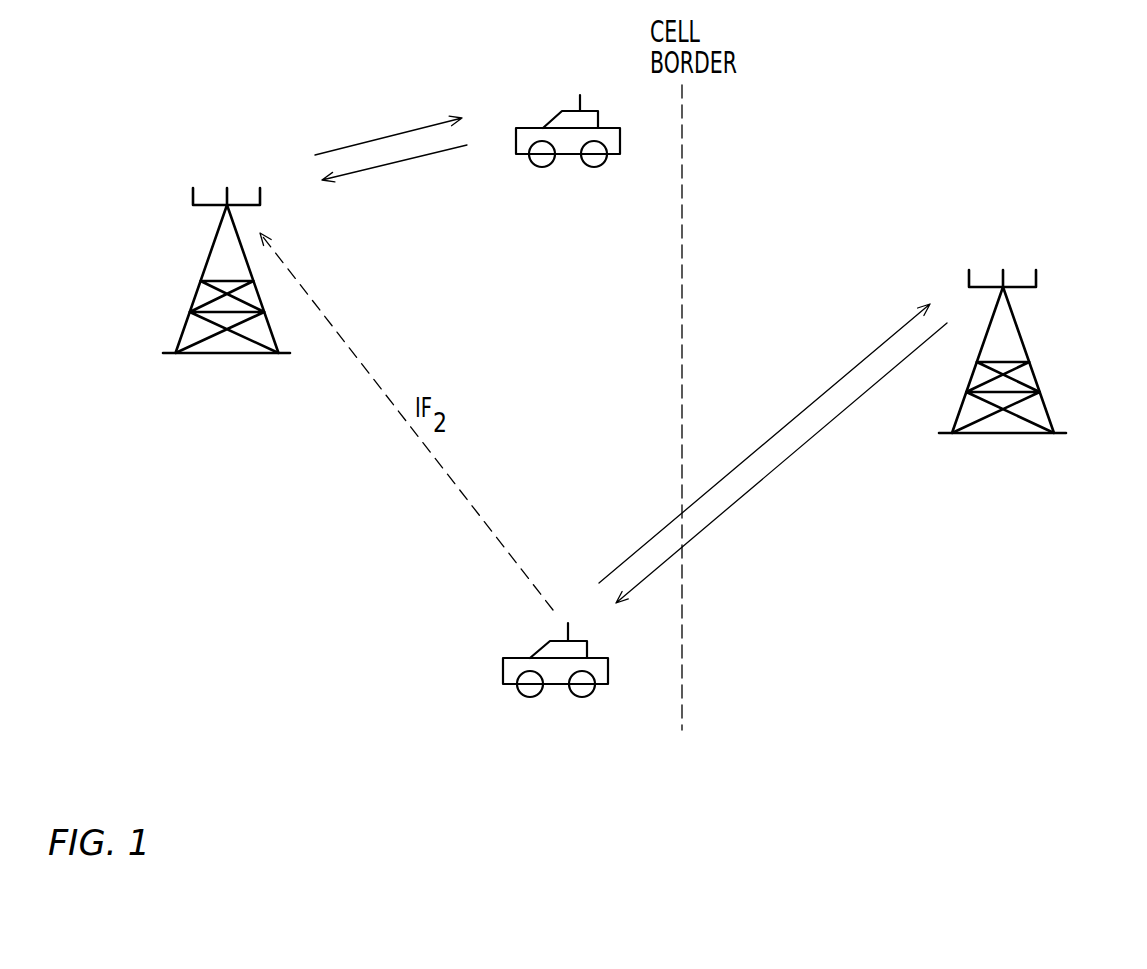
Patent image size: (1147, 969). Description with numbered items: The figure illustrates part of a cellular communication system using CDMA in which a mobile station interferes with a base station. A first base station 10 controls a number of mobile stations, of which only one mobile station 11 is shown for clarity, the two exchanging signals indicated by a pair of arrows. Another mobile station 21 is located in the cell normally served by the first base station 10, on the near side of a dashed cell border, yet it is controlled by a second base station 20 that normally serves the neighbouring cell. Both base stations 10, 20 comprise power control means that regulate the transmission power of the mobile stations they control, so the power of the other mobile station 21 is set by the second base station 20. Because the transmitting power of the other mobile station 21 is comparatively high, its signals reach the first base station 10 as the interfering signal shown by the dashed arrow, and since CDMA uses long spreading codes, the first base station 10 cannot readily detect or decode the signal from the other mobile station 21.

The first base station BS1 10 is at (188, 323).
The mobile station MS1 11 is at (516, 154).
The second base station BS2 20 is at (1054, 433).
The mobile station MS2 21 is at (503, 684).